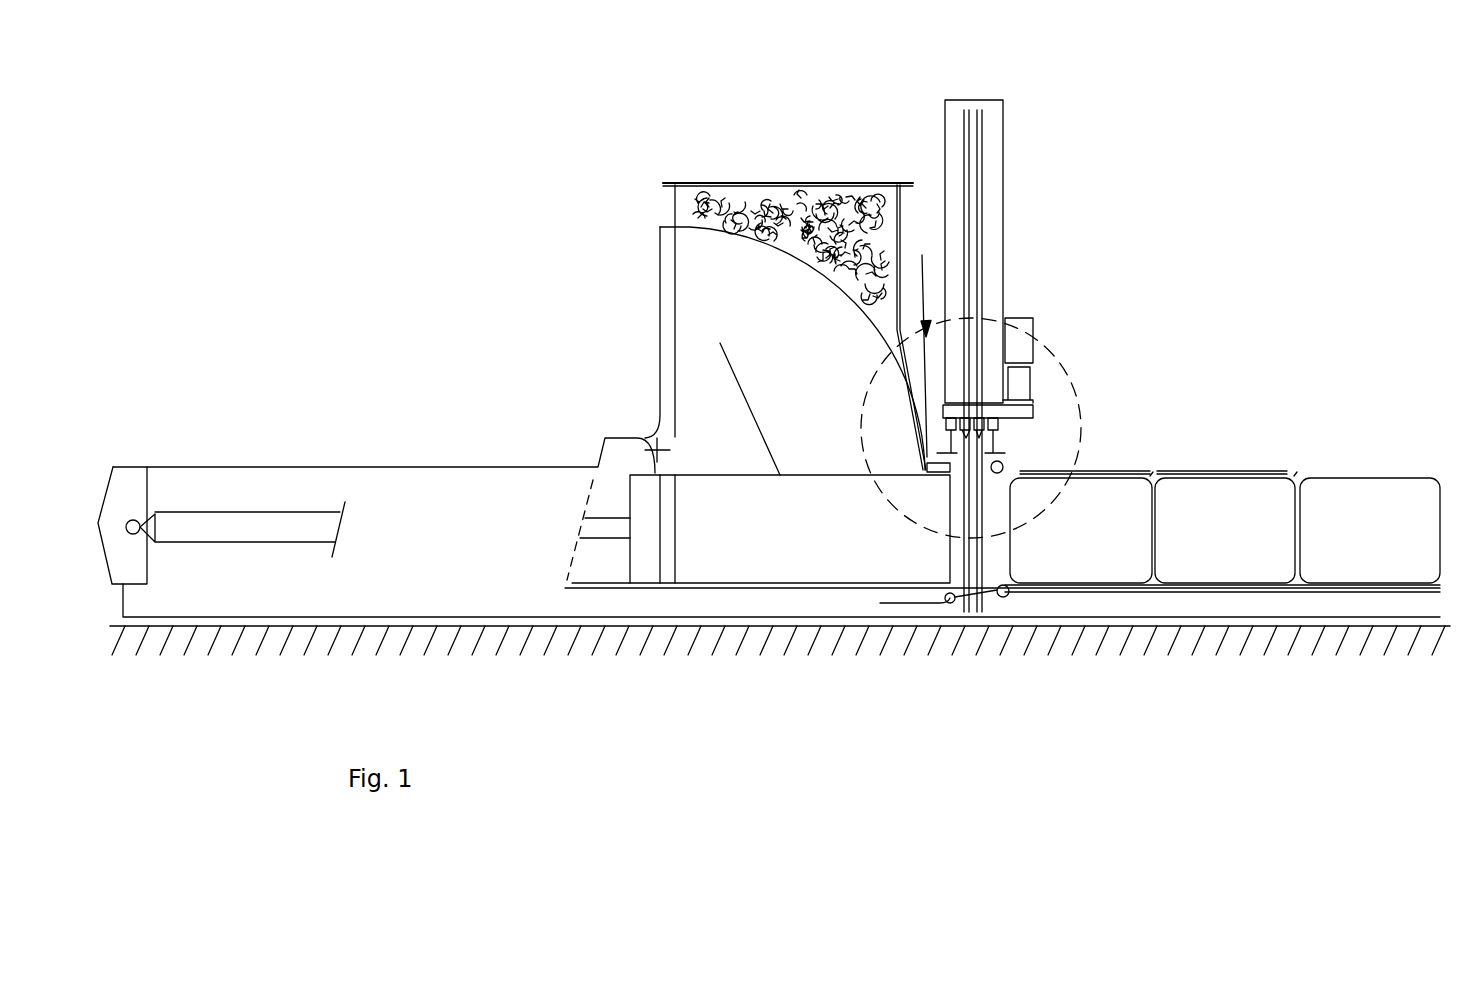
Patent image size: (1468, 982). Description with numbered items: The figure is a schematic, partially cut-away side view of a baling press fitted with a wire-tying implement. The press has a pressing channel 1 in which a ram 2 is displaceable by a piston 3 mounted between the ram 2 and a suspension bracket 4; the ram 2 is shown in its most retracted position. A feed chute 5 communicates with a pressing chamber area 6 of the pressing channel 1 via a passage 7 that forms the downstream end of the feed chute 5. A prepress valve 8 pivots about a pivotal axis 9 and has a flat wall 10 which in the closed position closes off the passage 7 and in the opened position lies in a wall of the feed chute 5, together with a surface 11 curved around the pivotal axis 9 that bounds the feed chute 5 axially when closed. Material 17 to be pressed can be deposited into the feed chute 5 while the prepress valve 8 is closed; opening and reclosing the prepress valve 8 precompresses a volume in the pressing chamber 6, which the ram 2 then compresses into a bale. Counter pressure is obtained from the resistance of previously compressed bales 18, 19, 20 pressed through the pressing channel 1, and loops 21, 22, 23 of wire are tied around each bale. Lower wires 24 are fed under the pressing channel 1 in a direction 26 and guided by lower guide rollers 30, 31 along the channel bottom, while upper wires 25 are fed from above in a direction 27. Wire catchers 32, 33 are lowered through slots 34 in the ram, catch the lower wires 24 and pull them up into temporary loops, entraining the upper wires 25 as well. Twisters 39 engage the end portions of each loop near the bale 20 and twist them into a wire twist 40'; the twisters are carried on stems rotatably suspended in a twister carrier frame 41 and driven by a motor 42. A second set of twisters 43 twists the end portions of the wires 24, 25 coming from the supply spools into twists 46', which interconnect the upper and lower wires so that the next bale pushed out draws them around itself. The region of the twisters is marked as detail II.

The pressing channel 1 is at (778, 553).
The ram 2 is at (628, 560).
The piston 3 is at (250, 512).
The suspension bracket 4 is at (130, 490).
The feed chute 5 is at (838, 215).
The pressing chamber area 6 is at (833, 541).
The passage 7 is at (738, 442).
The prepress valve 8 is at (803, 351).
The pivotal axis 9 is at (655, 440).
The flat wall 10 is at (720, 343).
The curved surface 11 is at (768, 235).
The material to be pressed 17 is at (740, 210).
The bale 18 is at (1386, 541).
The bale 19 is at (1241, 541).
The bale 20 is at (1098, 541).
The wire loop 21 is at (1352, 478).
The wire loop 22 is at (1207, 475).
The wire loop 23 is at (1127, 475).
The lower wire 24 is at (898, 603).
The upper wire 25 is at (920, 410).
The feed direction of lower wires 26 is at (875, 603).
The feed direction of upper wires 27 is at (923, 280).
The lower guide roller 30 is at (950, 603).
The lower guide roller 31 is at (1003, 597).
The wire catcher 32 is at (965, 120).
The wire catcher 33 is at (985, 120).
The slot 34 is at (667, 565).
The twister 39 is at (1000, 452).
The wire twist 40' is at (1232, 435).
The twister carrier frame 41 is at (1033, 410).
The motor 42 is at (1010, 323).
The second set of twisters 43 is at (943, 440).
The wire twist 46' is at (1256, 436).
The detail section II is at (1060, 360).